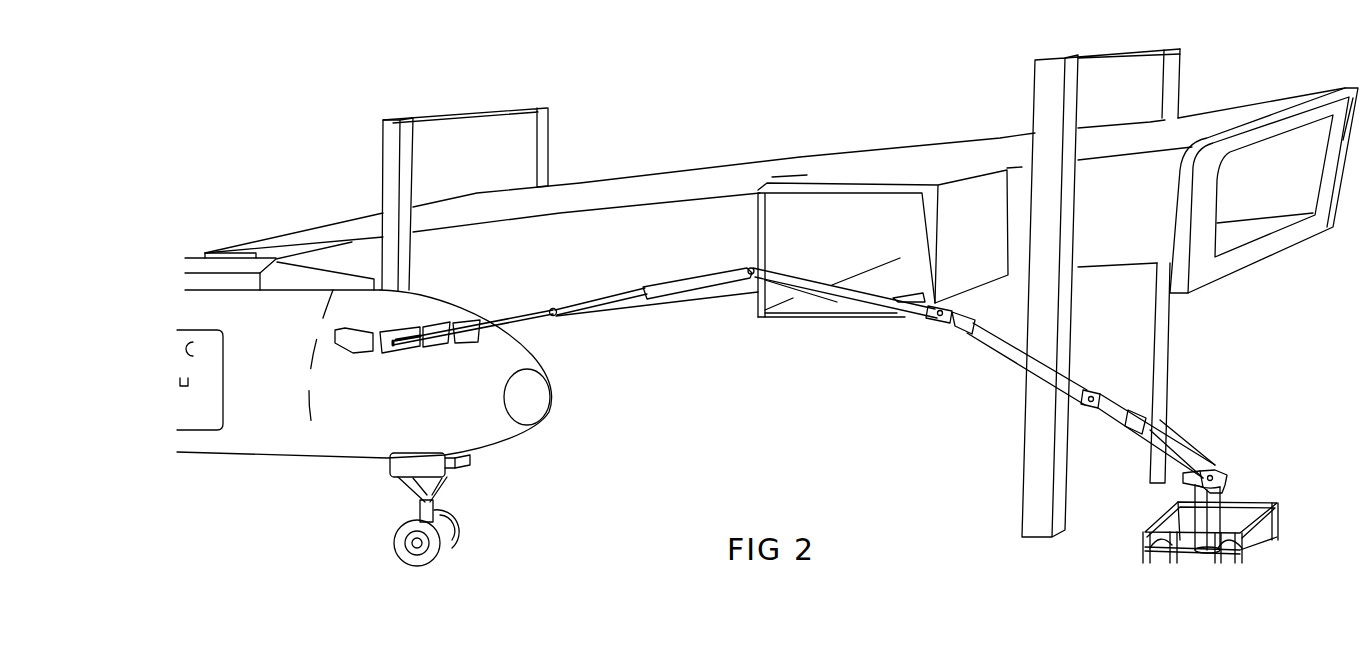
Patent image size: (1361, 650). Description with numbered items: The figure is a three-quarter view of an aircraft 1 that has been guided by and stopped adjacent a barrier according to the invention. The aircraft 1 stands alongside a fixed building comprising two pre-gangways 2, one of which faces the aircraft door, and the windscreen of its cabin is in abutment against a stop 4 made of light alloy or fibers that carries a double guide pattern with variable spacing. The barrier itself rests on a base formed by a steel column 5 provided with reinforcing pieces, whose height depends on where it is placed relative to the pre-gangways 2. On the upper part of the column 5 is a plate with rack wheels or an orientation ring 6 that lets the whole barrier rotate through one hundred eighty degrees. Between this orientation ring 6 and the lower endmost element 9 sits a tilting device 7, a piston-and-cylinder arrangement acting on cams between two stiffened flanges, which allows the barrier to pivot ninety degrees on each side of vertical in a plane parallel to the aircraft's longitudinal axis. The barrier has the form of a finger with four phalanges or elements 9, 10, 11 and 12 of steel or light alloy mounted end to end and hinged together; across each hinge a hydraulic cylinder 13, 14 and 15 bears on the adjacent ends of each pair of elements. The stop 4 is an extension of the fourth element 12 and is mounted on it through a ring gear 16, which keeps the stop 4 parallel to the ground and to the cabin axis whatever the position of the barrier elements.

The aircraft 1 is at (360, 437).
The pre-gangways 2 is at (226, 270).
The stop 4 is at (518, 315).
The steel column 5 is at (1217, 512).
The orientation ring 6 is at (1232, 487).
The tilting device 7 is at (1216, 464).
The lower endmost element 9 is at (1178, 443).
The second element 10 is at (1107, 388).
The third element 11 is at (839, 252).
The fourth element 12 is at (682, 278).
The hydraulic cylinder 13 is at (1125, 417).
The hydraulic cylinder 14 is at (978, 348).
The hydraulic cylinder 15 is at (810, 293).
The ring gear 16 is at (556, 313).